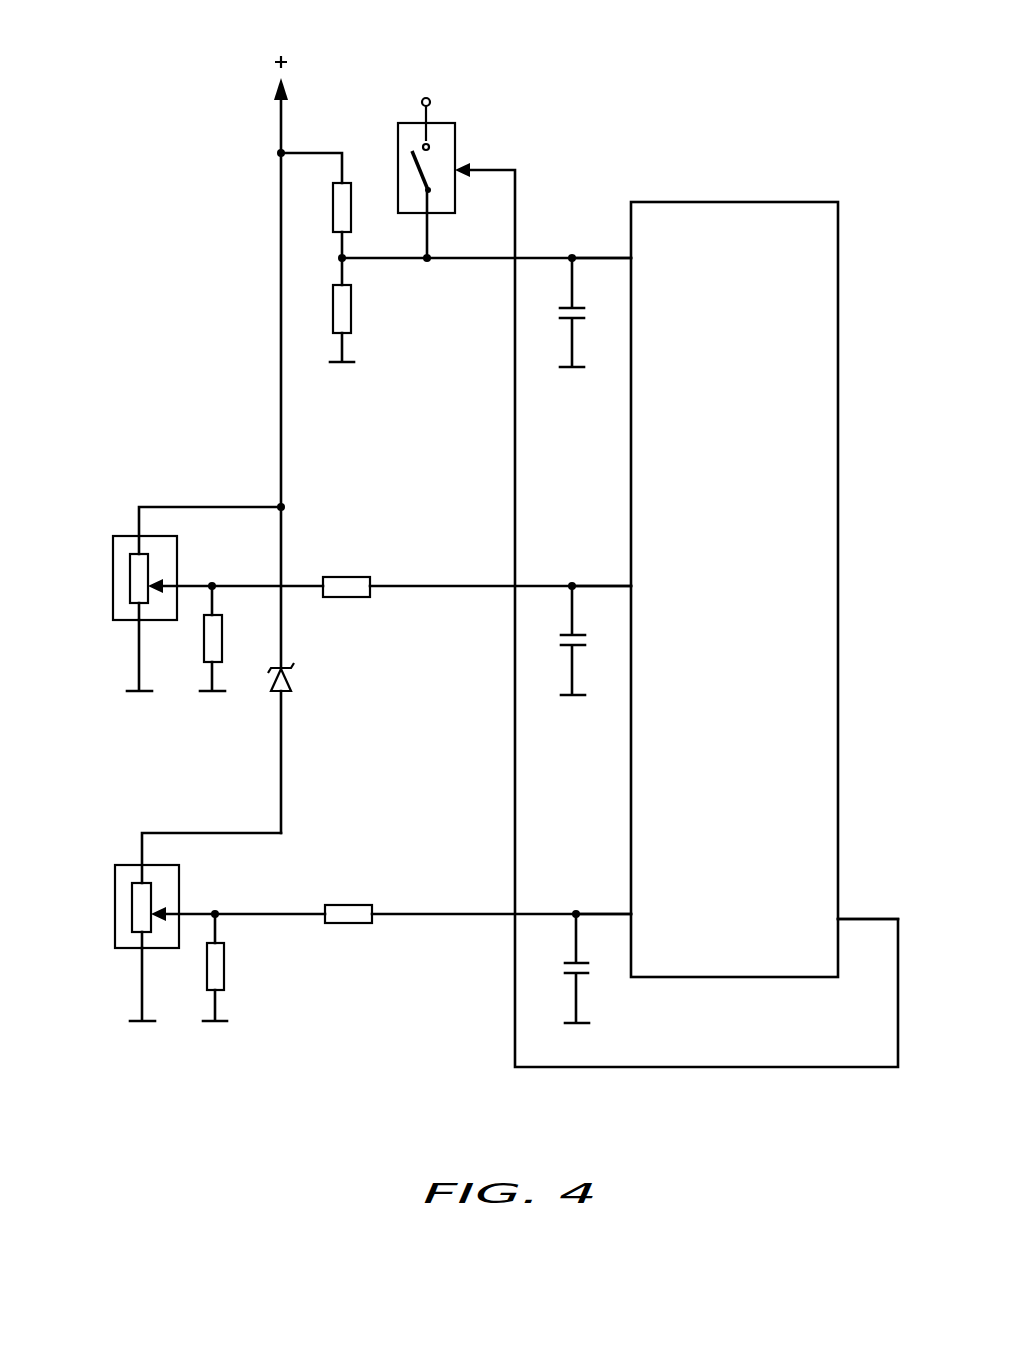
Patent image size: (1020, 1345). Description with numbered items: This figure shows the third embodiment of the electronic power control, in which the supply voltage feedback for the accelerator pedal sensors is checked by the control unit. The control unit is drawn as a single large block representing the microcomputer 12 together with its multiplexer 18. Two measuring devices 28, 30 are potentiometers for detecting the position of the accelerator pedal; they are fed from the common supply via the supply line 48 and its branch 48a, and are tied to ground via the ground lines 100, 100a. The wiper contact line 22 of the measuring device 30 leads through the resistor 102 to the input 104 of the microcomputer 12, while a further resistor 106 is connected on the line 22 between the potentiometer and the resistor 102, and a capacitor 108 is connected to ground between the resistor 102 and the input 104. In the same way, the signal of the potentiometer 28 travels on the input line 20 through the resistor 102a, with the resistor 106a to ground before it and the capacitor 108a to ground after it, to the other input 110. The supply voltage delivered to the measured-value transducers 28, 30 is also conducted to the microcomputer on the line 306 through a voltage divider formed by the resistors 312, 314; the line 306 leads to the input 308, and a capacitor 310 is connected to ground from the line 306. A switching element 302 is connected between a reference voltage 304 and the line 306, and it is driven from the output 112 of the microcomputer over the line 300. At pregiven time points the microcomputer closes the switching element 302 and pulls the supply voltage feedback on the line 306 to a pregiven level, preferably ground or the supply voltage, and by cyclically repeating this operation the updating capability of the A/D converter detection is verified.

The microcomputer 12 is at (734, 547).
The multiplexer 18 is at (773, 205).
The input line 20 is at (282, 912).
The wiper contact line 22 is at (434, 586).
The measuring device 28 is at (130, 868).
The measuring device 30 is at (170, 547).
The supply line 48 is at (280, 283).
The supply line 48a is at (207, 832).
The ground line 100 is at (139, 663).
The ground line 100a is at (142, 985).
The resistor 102 is at (344, 578).
The resistor 102a is at (350, 905).
The input 104 is at (629, 585).
The resistor 106 is at (208, 637).
The resistor 106a is at (224, 968).
The capacitor 108 is at (568, 648).
The capacitor 108a is at (582, 975).
The input 110 is at (630, 915).
The output 112 is at (842, 916).
The line 300 is at (515, 755).
The switching element 302 is at (449, 123).
The reference voltage 304 is at (426, 96).
The line 306 is at (312, 152).
The input 308 is at (628, 257).
The capacitor 310 is at (566, 320).
The resistor 312 is at (351, 207).
The resistor 314 is at (351, 313).